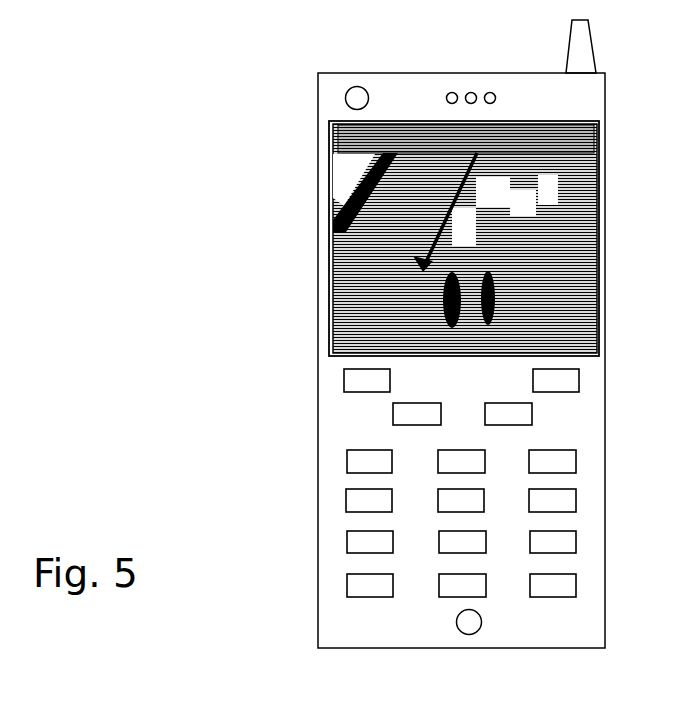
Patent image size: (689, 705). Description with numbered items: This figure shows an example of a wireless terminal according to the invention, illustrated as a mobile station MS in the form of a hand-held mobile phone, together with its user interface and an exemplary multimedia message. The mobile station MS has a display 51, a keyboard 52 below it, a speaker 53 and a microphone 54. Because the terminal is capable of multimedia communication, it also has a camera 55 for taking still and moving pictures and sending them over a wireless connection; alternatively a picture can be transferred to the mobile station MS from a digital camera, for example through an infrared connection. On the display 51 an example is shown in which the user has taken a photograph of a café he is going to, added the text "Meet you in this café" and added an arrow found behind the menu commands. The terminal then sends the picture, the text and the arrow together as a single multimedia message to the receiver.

The mobile station MS is at (232, 371).
The display 51 is at (334, 266).
The keyboard 52 is at (449, 464).
The speaker 53 is at (472, 95).
The microphone 54 is at (466, 620).
The camera 55 is at (356, 97).